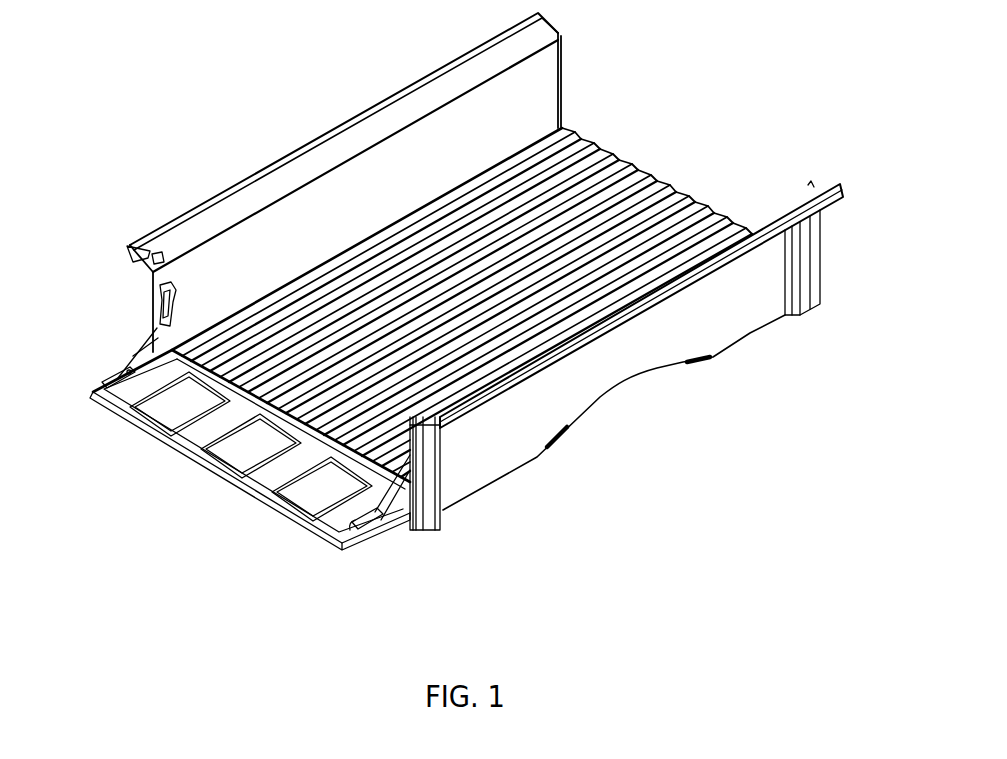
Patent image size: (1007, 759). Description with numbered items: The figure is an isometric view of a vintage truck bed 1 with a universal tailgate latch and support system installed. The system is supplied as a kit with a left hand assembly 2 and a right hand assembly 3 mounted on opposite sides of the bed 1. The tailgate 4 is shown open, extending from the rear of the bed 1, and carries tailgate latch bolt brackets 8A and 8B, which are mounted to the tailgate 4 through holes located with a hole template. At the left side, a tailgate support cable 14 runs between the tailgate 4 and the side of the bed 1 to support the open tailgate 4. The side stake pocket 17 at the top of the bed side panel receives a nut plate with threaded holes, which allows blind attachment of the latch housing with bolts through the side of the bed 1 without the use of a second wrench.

The truck bed 1 is at (265, 167).
The side stake pocket 17 is at (140, 248).
The left hand assembly 2 is at (120, 318).
The tailgate support cable 14 is at (134, 354).
The tailgate latch bolt bracket 8A is at (105, 383).
The tailgate 4 is at (235, 492).
The tailgate latch bolt bracket 8B is at (363, 537).
The right hand assembly 3 is at (395, 534).